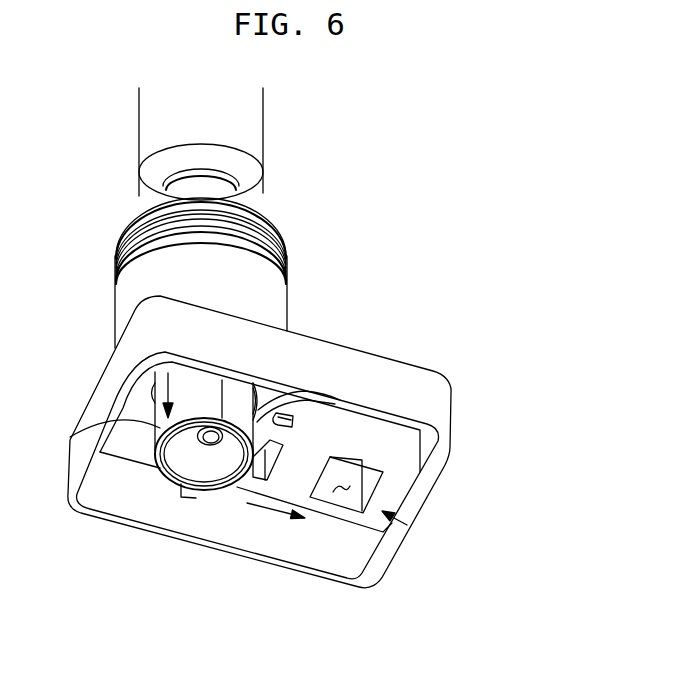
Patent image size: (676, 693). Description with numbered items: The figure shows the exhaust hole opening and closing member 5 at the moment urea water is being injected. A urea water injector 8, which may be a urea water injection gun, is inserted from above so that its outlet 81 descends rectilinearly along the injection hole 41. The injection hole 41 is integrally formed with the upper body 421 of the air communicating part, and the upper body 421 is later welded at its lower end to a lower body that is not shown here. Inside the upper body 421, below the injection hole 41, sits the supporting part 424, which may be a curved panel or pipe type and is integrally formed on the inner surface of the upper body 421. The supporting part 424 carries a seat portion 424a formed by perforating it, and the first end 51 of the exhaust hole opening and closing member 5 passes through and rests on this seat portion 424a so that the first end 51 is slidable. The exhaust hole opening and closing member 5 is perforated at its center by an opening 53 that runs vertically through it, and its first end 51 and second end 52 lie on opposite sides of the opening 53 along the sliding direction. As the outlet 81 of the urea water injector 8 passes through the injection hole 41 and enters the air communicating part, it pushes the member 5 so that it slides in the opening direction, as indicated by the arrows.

The urea water injector 8 is at (263, 135).
The injection hole 41 is at (270, 283).
The upper body 421 is at (450, 412).
The outlet 81 is at (70, 437).
The supporting part 424 is at (183, 497).
The seat portion 424a is at (257, 405).
The first end 51 is at (340, 400).
The exhaust hole opening and closing member 5 is at (413, 523).
The second end 52 is at (410, 490).
The opening 53 is at (340, 490).